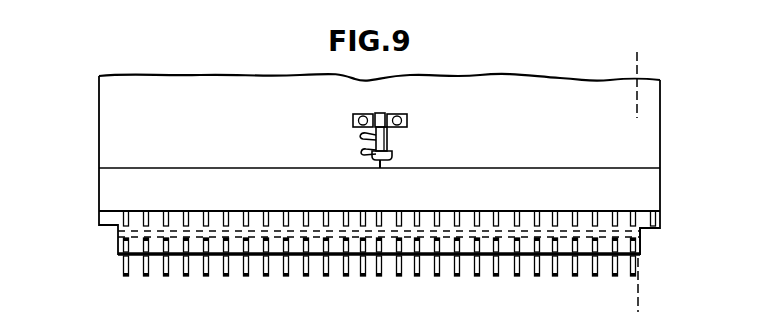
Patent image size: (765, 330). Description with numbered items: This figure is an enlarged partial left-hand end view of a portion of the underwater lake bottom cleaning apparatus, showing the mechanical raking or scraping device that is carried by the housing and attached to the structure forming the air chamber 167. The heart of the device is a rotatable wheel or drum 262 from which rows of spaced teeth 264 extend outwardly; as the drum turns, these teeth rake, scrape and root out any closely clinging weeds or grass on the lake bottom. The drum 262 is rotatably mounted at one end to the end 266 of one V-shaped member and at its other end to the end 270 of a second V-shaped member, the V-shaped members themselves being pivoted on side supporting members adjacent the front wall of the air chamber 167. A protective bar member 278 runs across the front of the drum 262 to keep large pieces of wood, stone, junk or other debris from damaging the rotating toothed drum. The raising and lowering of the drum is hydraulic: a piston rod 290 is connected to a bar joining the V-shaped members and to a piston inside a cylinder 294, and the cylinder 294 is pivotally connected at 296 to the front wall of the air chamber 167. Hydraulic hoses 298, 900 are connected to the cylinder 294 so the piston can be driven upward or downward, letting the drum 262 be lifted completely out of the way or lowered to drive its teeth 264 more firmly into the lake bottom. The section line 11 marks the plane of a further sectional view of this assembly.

The section line 11- 11 is at (677, 70).
The air chamber 167 is at (217, 90).
The drum 262 is at (122, 249).
The teeth 264 is at (455, 246).
The end of V-shaped member 266 is at (113, 243).
The end of V-shaped member 270 is at (644, 231).
The protective bar member 278 is at (117, 184).
The piston rod 290 is at (391, 157).
The cylinder 294 is at (389, 139).
The pivotal connection 296 is at (380, 114).
The hydraulic hose 298 is at (366, 151).
The hydraulic hose 900 is at (366, 134).